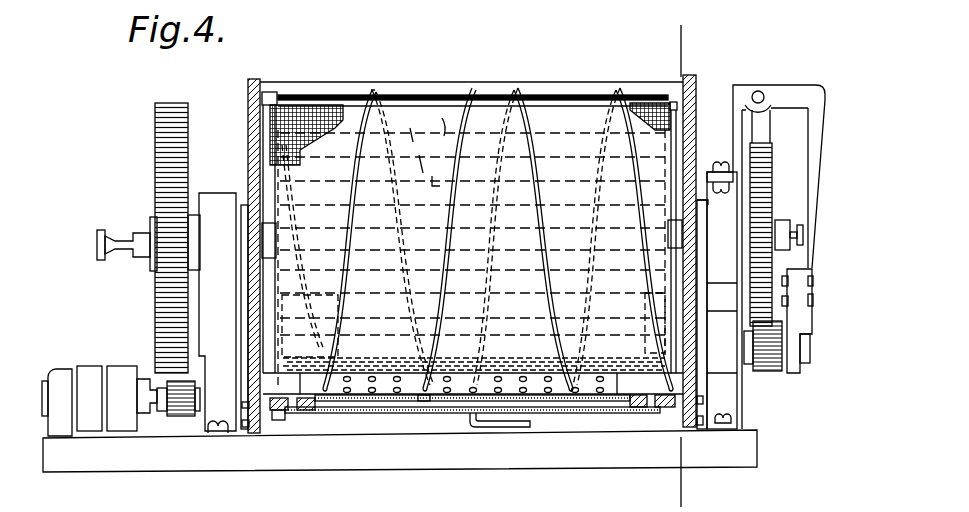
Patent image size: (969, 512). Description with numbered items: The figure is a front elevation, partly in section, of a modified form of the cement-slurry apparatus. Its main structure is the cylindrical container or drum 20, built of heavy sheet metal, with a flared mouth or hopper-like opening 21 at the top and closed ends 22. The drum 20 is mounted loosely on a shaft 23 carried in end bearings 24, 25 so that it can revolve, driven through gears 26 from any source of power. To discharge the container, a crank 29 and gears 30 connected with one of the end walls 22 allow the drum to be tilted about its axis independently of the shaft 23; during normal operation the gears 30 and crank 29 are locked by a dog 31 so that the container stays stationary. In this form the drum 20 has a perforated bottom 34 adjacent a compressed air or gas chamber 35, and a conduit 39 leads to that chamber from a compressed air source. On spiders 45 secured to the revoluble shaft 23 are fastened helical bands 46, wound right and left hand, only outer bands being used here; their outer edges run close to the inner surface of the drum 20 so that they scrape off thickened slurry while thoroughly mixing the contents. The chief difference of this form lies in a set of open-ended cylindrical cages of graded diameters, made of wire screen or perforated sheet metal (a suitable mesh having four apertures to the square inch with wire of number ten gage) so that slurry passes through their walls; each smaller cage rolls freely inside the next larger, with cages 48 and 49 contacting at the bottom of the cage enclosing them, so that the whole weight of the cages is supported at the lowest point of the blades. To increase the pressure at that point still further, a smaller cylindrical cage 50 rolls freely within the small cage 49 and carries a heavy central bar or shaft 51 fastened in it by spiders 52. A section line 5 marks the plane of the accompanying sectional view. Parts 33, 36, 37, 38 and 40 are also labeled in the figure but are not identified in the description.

The section line 5- 5 is at (646, 497).
The container 20 is at (578, 100).
The hopper-like opening 21 is at (440, 92).
The closed ends 22 is at (247, 92).
The shaft 23 is at (372, 252).
The end bearing 24 is at (223, 200).
The end bearing 25 is at (733, 402).
The gears 26 is at (157, 137).
The crank 29 is at (814, 203).
The gears 30 is at (775, 152).
The dog 31 is at (800, 93).
The base 33 is at (400, 471).
The perforated bottom 34 is at (610, 392).
The compressed air chamber 35 is at (352, 401).
The lower bar 36 is at (393, 413).
The support block 37 is at (305, 414).
The block 38 is at (279, 422).
The conduit 39 is at (531, 423).
The bracket 40 is at (425, 408).
The spiders 45 is at (273, 330).
The helical bands 46 is at (377, 94).
The cylindrical cage 48 is at (427, 148).
The cylindrical cage 49 is at (492, 105).
The cylindrical cage 50 is at (505, 294).
The central bar 51 is at (455, 320).
The spiders 52 is at (305, 320).